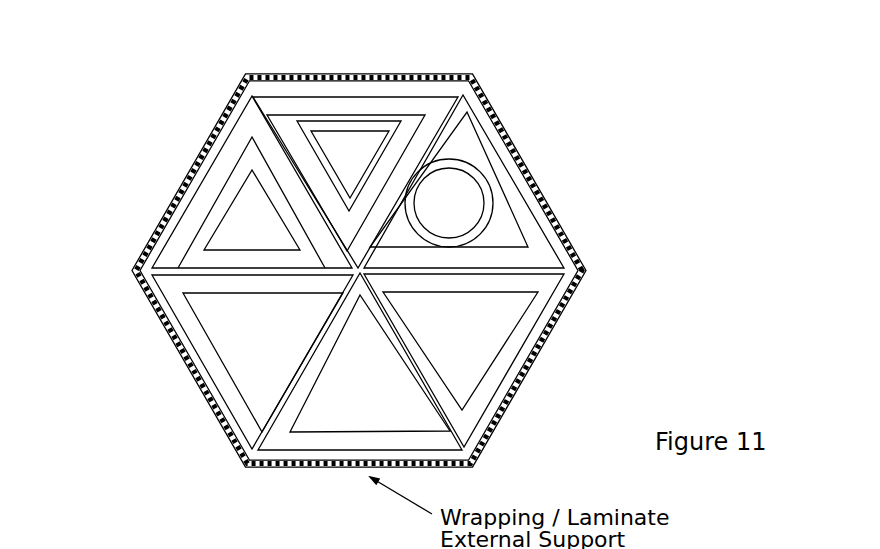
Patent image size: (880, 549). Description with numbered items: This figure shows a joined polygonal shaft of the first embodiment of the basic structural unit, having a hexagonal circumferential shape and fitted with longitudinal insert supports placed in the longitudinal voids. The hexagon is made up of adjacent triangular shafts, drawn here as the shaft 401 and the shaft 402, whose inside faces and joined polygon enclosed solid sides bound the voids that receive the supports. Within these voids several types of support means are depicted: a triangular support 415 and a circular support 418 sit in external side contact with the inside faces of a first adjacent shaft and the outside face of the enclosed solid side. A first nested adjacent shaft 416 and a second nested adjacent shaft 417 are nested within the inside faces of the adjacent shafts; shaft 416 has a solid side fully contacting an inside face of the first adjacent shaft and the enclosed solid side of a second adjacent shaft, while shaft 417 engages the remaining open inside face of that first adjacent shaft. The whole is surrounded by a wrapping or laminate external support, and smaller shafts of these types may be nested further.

The triangular cell wall 401 is at (208, 180).
The outer wall of triangular cell 402 is at (348, 102).
The triangular support 415 is at (204, 238).
The first nested adjacent shaft 416 is at (408, 123).
The second nested adjacent shaft 417 is at (365, 123).
The circular support 418 is at (468, 160).